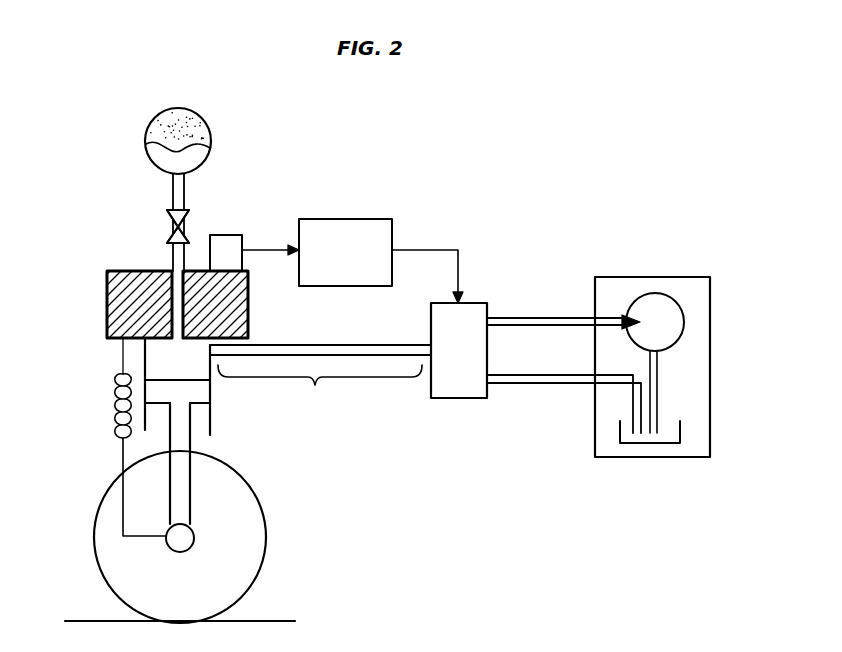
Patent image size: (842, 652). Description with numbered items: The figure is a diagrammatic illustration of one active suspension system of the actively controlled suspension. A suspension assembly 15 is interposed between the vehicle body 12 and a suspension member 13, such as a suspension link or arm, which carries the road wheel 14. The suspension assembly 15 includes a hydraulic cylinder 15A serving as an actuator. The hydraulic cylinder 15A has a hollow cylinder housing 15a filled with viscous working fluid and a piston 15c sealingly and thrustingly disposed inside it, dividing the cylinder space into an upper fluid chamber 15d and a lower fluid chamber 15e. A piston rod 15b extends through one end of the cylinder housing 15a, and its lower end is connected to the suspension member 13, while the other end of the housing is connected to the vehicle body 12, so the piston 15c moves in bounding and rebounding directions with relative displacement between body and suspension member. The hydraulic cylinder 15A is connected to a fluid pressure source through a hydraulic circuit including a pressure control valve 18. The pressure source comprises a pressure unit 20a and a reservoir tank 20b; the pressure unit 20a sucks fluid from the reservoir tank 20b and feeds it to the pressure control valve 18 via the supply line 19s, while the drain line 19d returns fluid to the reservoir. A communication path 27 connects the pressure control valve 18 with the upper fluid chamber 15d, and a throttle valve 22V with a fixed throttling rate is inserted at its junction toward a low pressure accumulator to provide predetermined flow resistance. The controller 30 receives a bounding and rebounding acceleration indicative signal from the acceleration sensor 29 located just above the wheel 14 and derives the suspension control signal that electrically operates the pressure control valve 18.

The vehicle body 12 is at (248, 300).
The suspension member 13 is at (186, 538).
The wheel 14 is at (267, 519).
The suspension assembly 15 is at (107, 285).
The hydraulic cylinder 15A is at (213, 405).
The cylinder housing 15a is at (212, 423).
The piston rod 15b is at (180, 438).
The piston 15c is at (160, 390).
The upper fluid chamber 15d is at (160, 355).
The lower fluid chamber 15e is at (160, 418).
The pressure control valve 18 is at (466, 385).
The supply line 19s is at (540, 318).
The drain line 19d is at (537, 375).
The pressure unit 20a is at (673, 332).
The reservoir tank 20b is at (673, 432).
The throttle valve 22V is at (186, 215).
The communication path 27 is at (320, 382).
The bounding and rebounding acceleration sensor 29 is at (227, 235).
The controller 30 is at (335, 219).